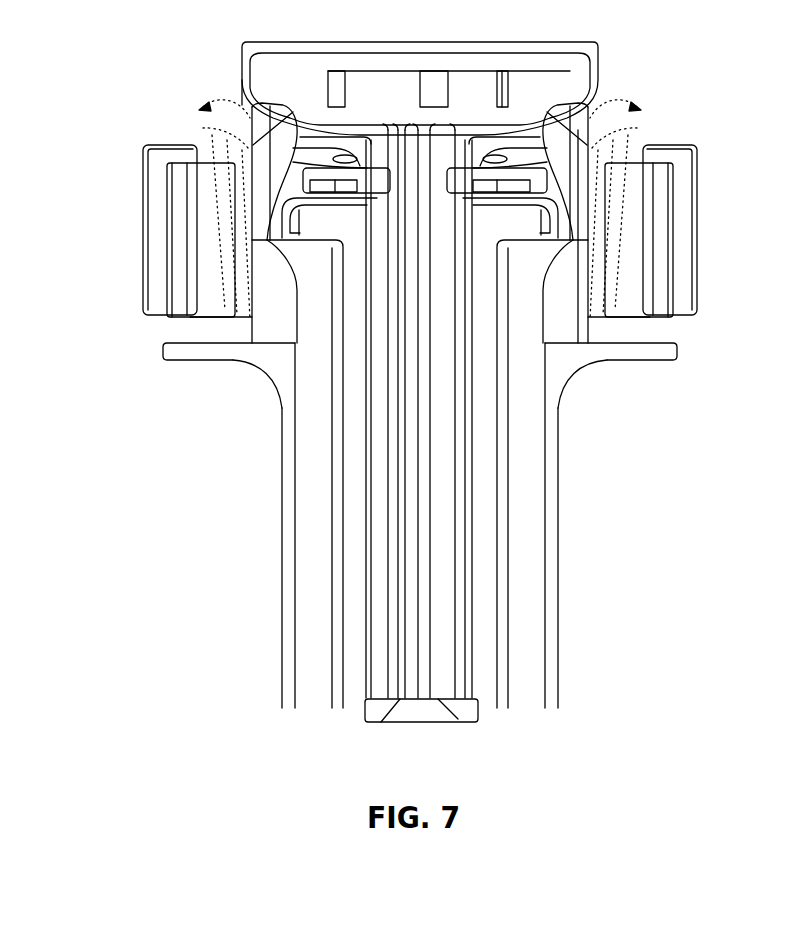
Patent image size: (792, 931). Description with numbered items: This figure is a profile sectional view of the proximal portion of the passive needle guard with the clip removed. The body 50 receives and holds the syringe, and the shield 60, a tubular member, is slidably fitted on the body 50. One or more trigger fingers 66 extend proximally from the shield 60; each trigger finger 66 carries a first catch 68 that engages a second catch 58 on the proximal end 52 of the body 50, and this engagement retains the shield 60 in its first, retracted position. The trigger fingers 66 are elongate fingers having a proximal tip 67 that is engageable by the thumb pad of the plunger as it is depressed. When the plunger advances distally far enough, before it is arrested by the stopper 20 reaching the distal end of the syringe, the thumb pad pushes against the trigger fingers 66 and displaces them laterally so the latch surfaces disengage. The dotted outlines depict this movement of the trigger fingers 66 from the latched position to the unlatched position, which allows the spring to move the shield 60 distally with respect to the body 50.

The stopper 20 is at (437, 724).
The body 50 is at (488, 603).
The proximal end of the body 52 is at (556, 255).
The second catch 58 is at (270, 236).
The shield 60 is at (572, 387).
The trigger fingers 66 is at (578, 223).
The proximal tip 67 is at (636, 109).
The first catch 68 is at (252, 233).